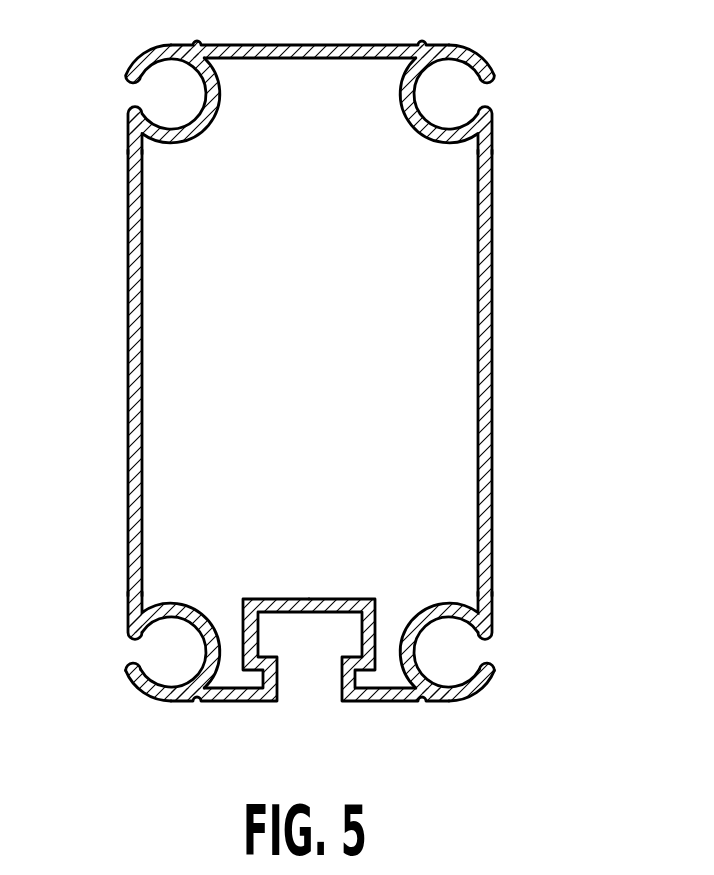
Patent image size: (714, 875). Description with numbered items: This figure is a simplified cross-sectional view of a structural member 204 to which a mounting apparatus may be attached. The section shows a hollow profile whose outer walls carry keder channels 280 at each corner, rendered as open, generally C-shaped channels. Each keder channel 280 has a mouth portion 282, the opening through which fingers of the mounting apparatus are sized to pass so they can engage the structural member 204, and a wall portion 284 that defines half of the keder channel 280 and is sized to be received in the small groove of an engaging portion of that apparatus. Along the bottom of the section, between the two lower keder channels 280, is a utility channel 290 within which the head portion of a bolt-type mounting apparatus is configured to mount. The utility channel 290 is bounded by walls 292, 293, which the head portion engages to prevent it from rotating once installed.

The structural member 204 is at (492, 371).
The keder channel 280 is at (446, 655).
The mouth portion 282 is at (502, 637).
The wall portion 284 is at (485, 691).
The utility channel 290 is at (330, 700).
The wall 292 is at (380, 615).
The wall 293 is at (240, 615).